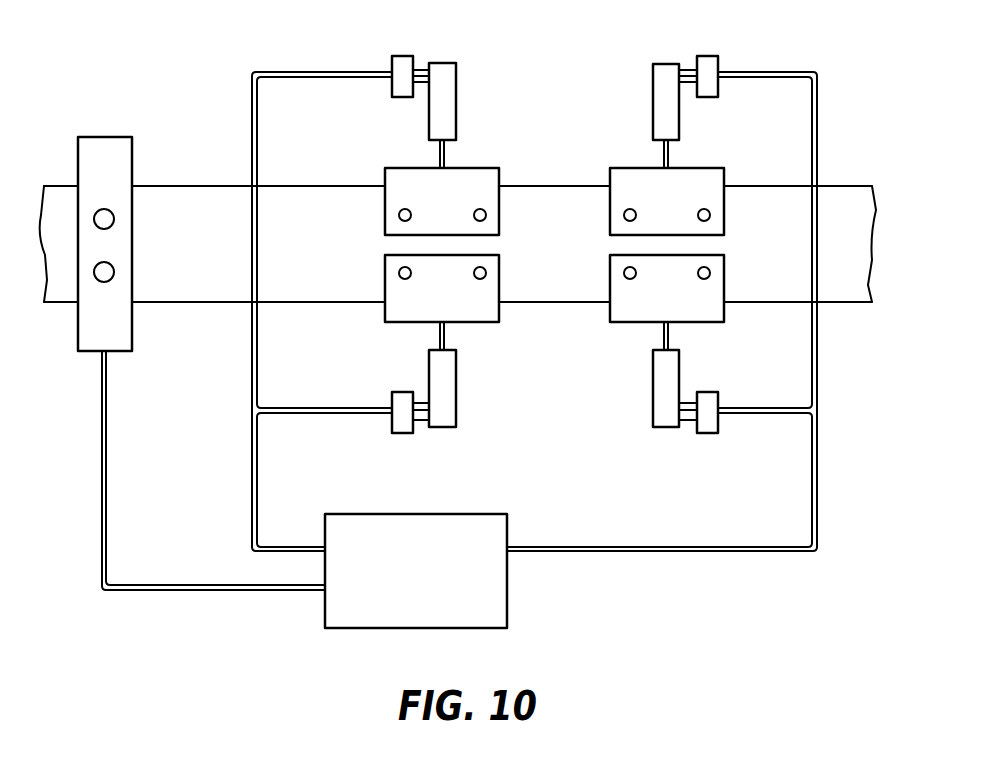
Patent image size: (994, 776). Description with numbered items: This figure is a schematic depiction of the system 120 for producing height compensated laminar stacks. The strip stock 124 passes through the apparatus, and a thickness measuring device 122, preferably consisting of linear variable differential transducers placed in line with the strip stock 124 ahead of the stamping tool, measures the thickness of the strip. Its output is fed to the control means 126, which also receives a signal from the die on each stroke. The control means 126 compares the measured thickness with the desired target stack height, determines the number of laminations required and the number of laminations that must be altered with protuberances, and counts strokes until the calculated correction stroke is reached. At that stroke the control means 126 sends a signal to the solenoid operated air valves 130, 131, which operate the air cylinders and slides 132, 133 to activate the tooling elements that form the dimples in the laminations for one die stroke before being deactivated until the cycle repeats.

The lamination stamping system 120 is at (835, 172).
The thickness measuring device 122 is at (78, 340).
The strip stock 124 is at (186, 186).
The control means 126 is at (507, 600).
The solenoid operated air valve 130 is at (456, 395).
The solenoid operated air valve 131 is at (448, 83).
The air cylinder and slide 132 is at (478, 317).
The air cylinder and slide 133 is at (473, 172).